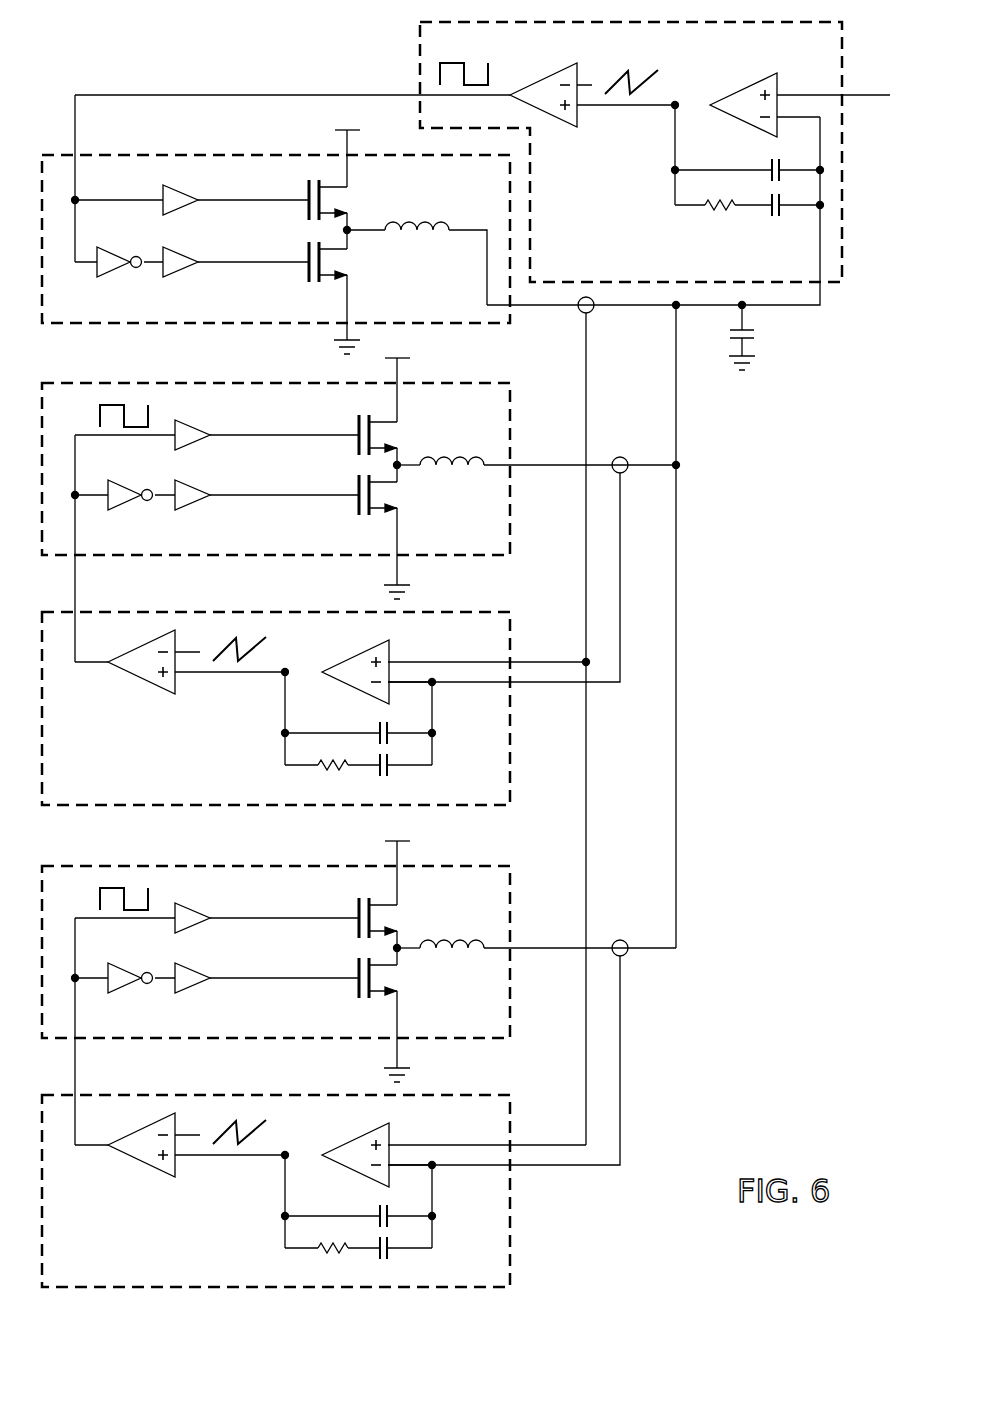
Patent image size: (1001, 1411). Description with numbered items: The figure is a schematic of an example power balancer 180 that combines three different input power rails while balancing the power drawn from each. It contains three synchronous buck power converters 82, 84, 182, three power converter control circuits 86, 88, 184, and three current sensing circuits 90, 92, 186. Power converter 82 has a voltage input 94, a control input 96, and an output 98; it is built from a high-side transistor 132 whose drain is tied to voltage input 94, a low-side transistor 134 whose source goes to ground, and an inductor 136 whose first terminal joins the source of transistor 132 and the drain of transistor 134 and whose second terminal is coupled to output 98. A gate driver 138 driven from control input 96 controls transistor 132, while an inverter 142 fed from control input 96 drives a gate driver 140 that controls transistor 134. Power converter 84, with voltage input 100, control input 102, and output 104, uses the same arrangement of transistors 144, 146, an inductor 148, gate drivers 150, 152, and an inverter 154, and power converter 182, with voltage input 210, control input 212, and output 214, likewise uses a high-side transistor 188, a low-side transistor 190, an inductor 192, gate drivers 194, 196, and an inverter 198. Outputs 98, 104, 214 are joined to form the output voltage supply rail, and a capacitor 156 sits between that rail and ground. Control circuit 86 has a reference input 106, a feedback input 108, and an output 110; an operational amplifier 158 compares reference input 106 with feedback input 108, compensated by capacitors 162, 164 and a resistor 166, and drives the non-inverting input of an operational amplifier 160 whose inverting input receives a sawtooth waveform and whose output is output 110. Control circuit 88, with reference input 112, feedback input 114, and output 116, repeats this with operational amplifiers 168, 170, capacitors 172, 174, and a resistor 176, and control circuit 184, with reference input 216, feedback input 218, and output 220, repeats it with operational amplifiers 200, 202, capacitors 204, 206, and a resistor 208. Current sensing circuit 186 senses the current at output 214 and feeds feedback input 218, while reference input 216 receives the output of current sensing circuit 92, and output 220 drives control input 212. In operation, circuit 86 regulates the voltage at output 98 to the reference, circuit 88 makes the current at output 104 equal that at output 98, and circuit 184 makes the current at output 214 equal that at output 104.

The power balancer 180 is at (150, 48).
The power converter 82 is at (431, 291).
The power converter 84 is at (465, 523).
The power converter control circuit 86 is at (616, 236).
The power converter control circuit 88 is at (171, 771).
The power converter 182 is at (472, 1006).
The power converter control circuit 184 is at (184, 1254).
The current sensing circuit 90 is at (595, 313).
The current sensing circuit 92 is at (627, 459).
The current sensing circuit 186 is at (628, 954).
The voltage input 94 is at (343, 148).
The control input 96 is at (62, 154).
The output 98 is at (518, 312).
The voltage input 100 is at (408, 378).
The control input 102 is at (70, 560).
The output 104 is at (518, 472).
The reference input 106 is at (848, 94).
The feedback input 108 is at (828, 285).
The output 110 is at (418, 94).
The reference input 112 is at (518, 661).
The feedback input 114 is at (518, 690).
The output 116 is at (78, 609).
The high-side transistor 132 is at (307, 195).
The low-side transistor 134 is at (307, 272).
The inductor 136 is at (427, 216).
The gate driver 138 is at (190, 215).
The gate driver 140 is at (188, 278).
The inverter 142 is at (122, 278).
The transistor 144 is at (357, 426).
The transistor 146 is at (357, 505).
The inductor 148 is at (460, 452).
The gate driver 150 is at (200, 446).
The gate driver 152 is at (200, 509).
The inverter 154 is at (132, 509).
The capacitor 156 is at (756, 336).
The operational amplifier 158 is at (745, 86).
The operational amplifier 160 is at (545, 76).
The capacitor 162 is at (772, 160).
The capacitor 164 is at (777, 216).
The resistor 166 is at (717, 212).
The operational amplifier 168 is at (345, 661).
The operational amplifier 170 is at (140, 683).
The capacitor 172 is at (380, 722).
The capacitor 174 is at (390, 776).
The resistor 176 is at (320, 771).
The high-side transistor 188 is at (357, 909).
The low-side transistor 190 is at (357, 988).
The inductor 192 is at (460, 935).
The gate driver 194 is at (200, 929).
The gate driver 196 is at (200, 992).
The inverter 198 is at (132, 992).
The operational amplifier 200 is at (345, 1144).
The operational amplifier 202 is at (140, 1166).
The capacitor 204 is at (380, 1205).
The capacitor 206 is at (390, 1259).
The resistor 208 is at (320, 1254).
The voltage input 210 is at (408, 861).
The control input 212 is at (70, 1043).
The output 214 is at (518, 955).
The reference input 216 is at (518, 1144).
The feedback input 218 is at (518, 1173).
The output 220 is at (78, 1092).